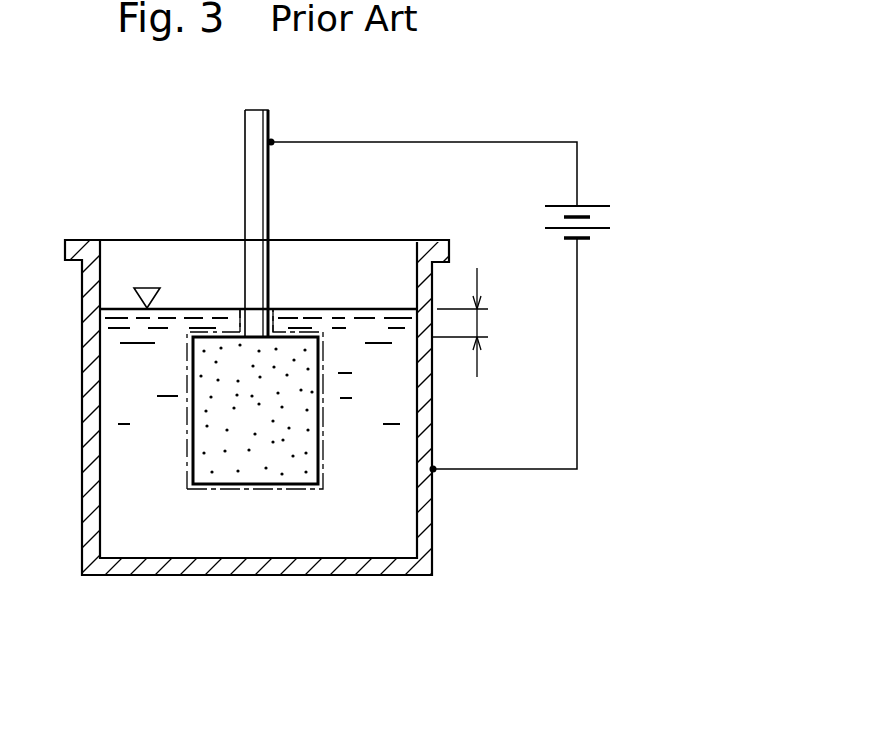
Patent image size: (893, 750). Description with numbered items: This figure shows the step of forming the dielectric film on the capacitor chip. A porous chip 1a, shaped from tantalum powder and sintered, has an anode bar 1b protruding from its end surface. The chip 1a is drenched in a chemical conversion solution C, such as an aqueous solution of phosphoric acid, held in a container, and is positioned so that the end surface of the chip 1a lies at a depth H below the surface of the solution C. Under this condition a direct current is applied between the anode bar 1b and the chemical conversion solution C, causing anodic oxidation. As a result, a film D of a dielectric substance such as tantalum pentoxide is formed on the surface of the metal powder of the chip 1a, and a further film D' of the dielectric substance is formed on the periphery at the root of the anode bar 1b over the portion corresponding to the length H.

The porous chip 1a is at (277, 455).
The anode bar 1b is at (245, 157).
The chemical conversion solution C is at (133, 405).
The film of dielectric substance D is at (170, 414).
The film of dielectric substance D' is at (216, 257).
The depth H is at (474, 322).